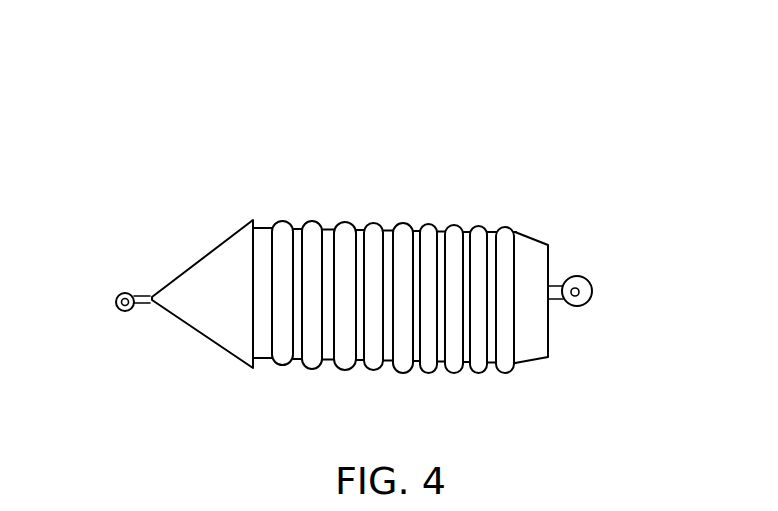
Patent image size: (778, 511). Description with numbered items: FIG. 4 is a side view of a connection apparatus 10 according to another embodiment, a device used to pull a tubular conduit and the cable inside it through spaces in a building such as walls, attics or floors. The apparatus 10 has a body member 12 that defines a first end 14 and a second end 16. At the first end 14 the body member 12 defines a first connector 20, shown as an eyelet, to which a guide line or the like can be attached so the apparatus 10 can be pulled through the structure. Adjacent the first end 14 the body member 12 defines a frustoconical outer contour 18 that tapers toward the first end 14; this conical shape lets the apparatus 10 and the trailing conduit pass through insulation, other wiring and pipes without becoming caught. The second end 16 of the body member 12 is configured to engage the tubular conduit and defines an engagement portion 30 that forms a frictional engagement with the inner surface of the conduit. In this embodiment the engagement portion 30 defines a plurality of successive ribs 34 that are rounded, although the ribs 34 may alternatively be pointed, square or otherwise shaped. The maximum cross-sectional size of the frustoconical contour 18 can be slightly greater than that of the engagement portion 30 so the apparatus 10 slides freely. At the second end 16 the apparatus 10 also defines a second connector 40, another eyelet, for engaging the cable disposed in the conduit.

The connection apparatus 10 is at (418, 95).
The body member 12 is at (331, 226).
The first end 14 is at (157, 267).
The second end 16 is at (543, 375).
The frustoconical outer contour 18 is at (202, 332).
The first connector 20 is at (120, 311).
The engagement portion 30 is at (410, 357).
The ribs 34 is at (481, 225).
The second connector 40 is at (592, 282).